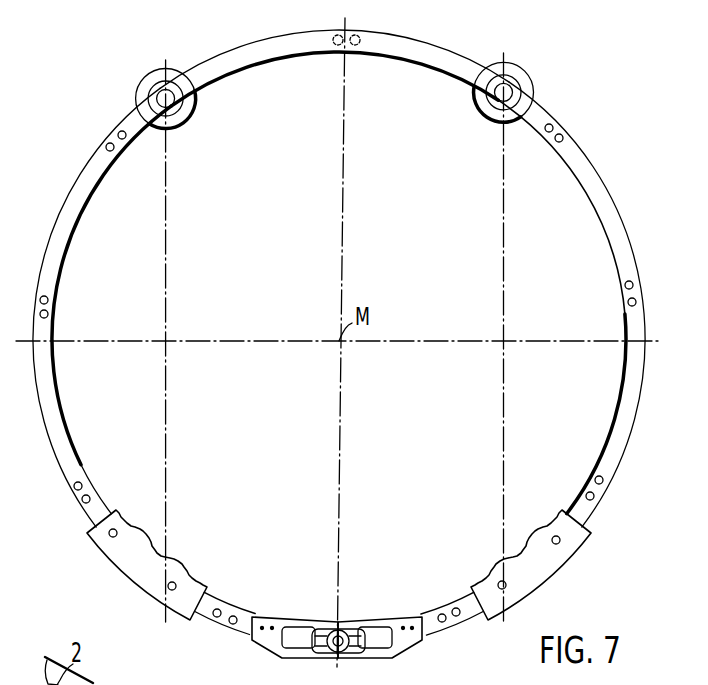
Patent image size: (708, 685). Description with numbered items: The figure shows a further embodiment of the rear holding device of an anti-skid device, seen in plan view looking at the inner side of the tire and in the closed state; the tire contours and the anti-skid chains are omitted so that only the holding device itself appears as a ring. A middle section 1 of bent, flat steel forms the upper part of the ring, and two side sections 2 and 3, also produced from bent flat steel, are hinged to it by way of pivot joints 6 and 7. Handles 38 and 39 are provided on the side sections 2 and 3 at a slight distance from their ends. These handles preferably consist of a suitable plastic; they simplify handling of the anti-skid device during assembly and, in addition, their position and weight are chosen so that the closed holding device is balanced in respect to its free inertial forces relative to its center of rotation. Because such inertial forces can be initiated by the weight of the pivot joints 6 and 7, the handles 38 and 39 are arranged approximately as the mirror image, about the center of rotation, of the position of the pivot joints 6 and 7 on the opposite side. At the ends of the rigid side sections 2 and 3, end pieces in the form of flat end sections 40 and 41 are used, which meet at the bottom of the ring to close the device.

The middle section 1 is at (442, 62).
The side section 2 is at (70, 210).
The side section 3 is at (609, 213).
The pivot joint 6 is at (534, 90).
The pivot joint 7 is at (137, 88).
The handle 38 is at (113, 557).
The handle 39 is at (554, 557).
The flat end section 40 is at (273, 635).
The flat end section 41 is at (401, 642).